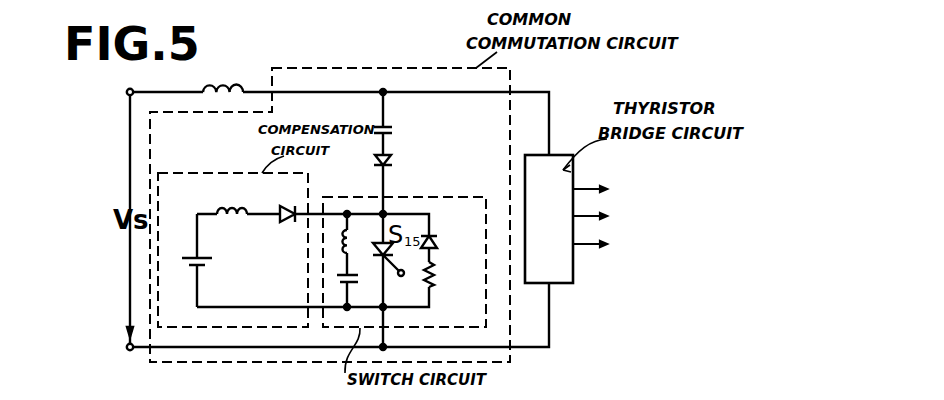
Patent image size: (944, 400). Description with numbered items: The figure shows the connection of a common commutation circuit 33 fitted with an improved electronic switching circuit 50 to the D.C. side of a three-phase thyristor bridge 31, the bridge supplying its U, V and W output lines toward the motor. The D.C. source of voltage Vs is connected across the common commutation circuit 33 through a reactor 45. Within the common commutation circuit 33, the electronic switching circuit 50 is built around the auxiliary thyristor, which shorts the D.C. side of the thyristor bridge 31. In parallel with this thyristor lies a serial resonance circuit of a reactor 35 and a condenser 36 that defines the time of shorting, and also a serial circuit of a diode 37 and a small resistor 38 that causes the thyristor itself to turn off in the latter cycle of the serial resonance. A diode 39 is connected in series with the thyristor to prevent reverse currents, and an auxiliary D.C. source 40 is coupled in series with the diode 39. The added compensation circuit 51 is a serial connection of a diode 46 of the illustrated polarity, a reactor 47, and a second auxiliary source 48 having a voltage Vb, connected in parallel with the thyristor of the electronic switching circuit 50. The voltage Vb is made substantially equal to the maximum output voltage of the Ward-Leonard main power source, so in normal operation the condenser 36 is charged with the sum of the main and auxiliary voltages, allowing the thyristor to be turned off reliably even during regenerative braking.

The three-phase thyristor bridge 31 is at (560, 155).
The common commutation circuit 33 is at (399, 70).
The reactor 35 is at (361, 244).
The condenser 36 is at (372, 282).
The diode 37 is at (437, 241).
The small resistor 38 is at (436, 270).
The diode 39 is at (395, 161).
The auxiliary D.C. source 40 is at (398, 131).
The reactor 45 is at (236, 86).
The diode 46 is at (285, 224).
The reactor 47 is at (231, 222).
The second auxiliary source 48 is at (207, 267).
The electronic switching circuit 50 is at (440, 197).
The compensation circuit 51 is at (196, 174).